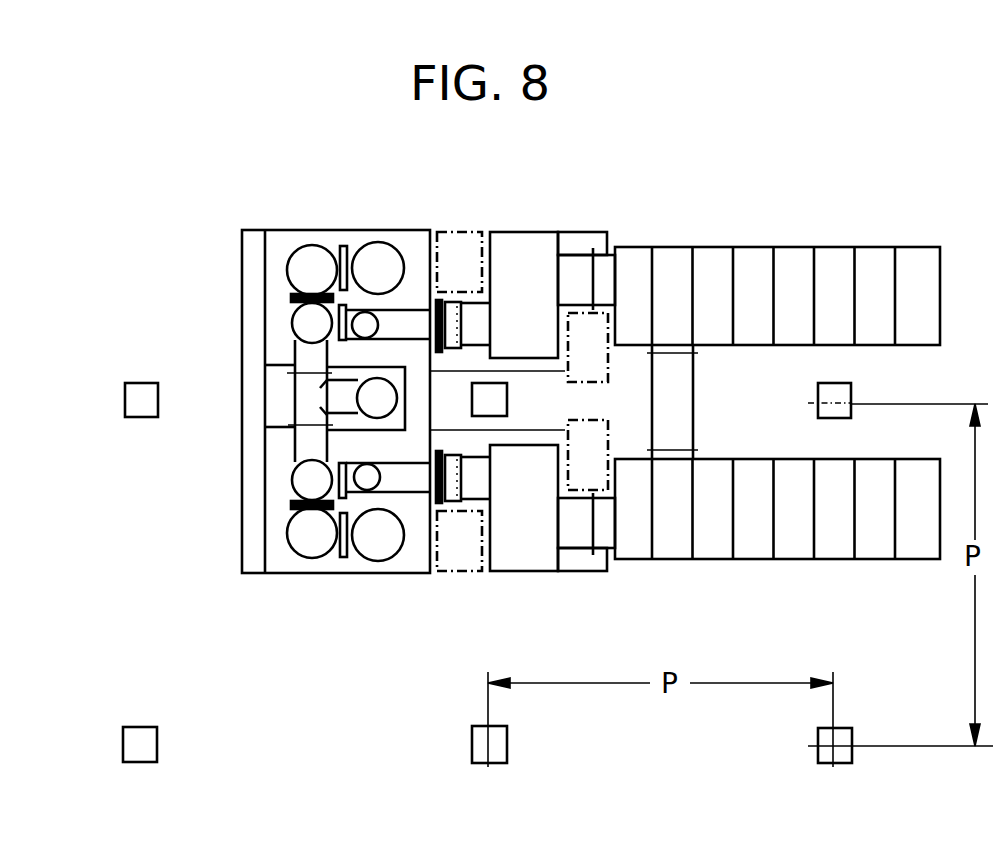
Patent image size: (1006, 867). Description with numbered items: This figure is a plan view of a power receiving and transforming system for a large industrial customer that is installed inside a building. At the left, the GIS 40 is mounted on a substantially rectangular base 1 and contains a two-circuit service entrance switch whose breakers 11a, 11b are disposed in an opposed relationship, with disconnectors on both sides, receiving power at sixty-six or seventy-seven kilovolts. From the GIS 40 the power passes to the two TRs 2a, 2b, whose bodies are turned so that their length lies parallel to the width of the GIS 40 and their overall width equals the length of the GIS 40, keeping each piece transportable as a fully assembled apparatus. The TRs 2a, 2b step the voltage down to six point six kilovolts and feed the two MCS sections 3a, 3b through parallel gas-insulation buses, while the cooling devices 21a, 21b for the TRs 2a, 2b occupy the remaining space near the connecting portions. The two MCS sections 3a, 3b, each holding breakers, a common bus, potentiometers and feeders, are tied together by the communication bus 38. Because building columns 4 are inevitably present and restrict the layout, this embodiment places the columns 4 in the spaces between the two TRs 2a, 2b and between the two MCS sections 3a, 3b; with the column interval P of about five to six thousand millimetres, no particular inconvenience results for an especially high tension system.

The base 1 is at (275, 230).
The GIS 40 is at (365, 230).
The breaker 11a is at (309, 246).
The breaker 11b is at (305, 572).
The cooling device 21a is at (452, 233).
The cooling device 21b is at (446, 575).
The TR 2a is at (532, 232).
The TR 2b is at (527, 573).
The MCS section 3a is at (760, 247).
The MCS section 3b is at (753, 560).
The communication bus 38 is at (695, 392).
The column 4 is at (507, 401).